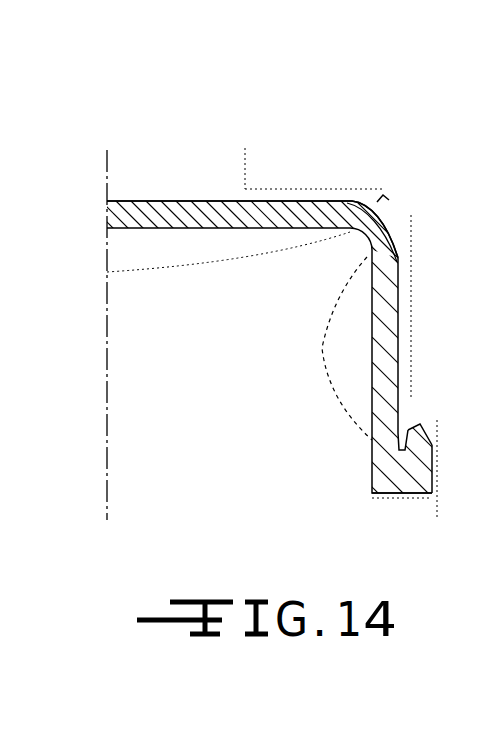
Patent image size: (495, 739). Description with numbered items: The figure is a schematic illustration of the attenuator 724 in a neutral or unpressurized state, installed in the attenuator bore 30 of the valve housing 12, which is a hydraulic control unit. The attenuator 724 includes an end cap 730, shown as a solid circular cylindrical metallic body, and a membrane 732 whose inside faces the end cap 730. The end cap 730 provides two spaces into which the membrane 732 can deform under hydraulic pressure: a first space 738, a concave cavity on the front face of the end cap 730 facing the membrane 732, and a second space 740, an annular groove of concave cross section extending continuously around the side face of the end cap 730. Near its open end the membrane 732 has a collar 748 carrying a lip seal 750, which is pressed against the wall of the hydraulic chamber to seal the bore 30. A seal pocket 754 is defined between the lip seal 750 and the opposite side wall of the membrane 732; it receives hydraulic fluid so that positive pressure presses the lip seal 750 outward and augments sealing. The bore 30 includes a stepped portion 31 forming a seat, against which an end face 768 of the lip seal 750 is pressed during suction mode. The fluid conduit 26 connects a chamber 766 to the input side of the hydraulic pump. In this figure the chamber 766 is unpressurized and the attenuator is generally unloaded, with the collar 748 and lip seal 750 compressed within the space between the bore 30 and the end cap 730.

The attenuator 724 is at (148, 125).
The membrane 732 is at (133, 200).
The fluid conduit 26 is at (228, 171).
The valve housing 12 is at (272, 185).
The attenuator bore 30 is at (367, 197).
The chamber 766 is at (402, 236).
The first space 738 is at (165, 242).
The end cap 730 is at (180, 348).
The second space 740 is at (356, 370).
The stepped portion 31 is at (373, 477).
The seal pocket 754 is at (400, 435).
The end face 768 is at (423, 425).
The collar 748 is at (406, 475).
The lip seal 750 is at (433, 443).